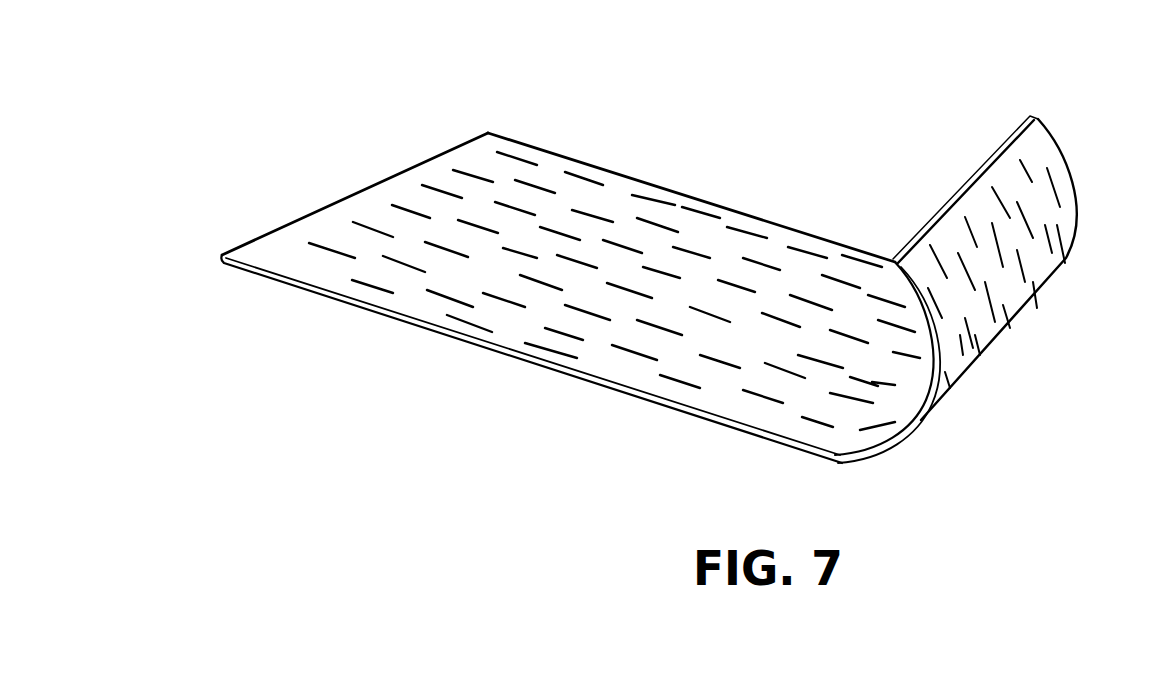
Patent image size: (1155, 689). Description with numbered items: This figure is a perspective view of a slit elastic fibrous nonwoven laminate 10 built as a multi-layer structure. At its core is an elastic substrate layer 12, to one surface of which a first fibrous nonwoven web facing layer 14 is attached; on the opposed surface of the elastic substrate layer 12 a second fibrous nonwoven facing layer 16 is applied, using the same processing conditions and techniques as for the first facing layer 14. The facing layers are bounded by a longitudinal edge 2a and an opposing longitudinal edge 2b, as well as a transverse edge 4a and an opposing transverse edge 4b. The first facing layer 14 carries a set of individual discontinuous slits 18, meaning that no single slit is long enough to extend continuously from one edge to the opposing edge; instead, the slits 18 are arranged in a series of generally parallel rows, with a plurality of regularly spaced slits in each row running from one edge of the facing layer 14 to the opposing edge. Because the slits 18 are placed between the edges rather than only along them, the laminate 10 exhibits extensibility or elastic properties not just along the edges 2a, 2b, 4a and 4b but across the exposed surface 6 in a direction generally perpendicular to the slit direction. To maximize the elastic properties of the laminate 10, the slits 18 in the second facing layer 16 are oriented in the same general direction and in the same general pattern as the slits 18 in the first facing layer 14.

The elastic fibrous nonwoven laminate 10 is at (686, 256).
The longitudinal edge 2a is at (305, 218).
The opposing longitudinal edge 2b is at (1020, 128).
The transverse edge 4a is at (424, 322).
The opposing transverse edge 4b is at (688, 187).
The exposed surface 6 is at (643, 262).
The elastic substrate layer 12 is at (506, 351).
The first fibrous nonwoven web facing layer 14 is at (577, 265).
The second fibrous nonwoven facing layer 16 is at (1022, 234).
The slits 18 is at (402, 212).